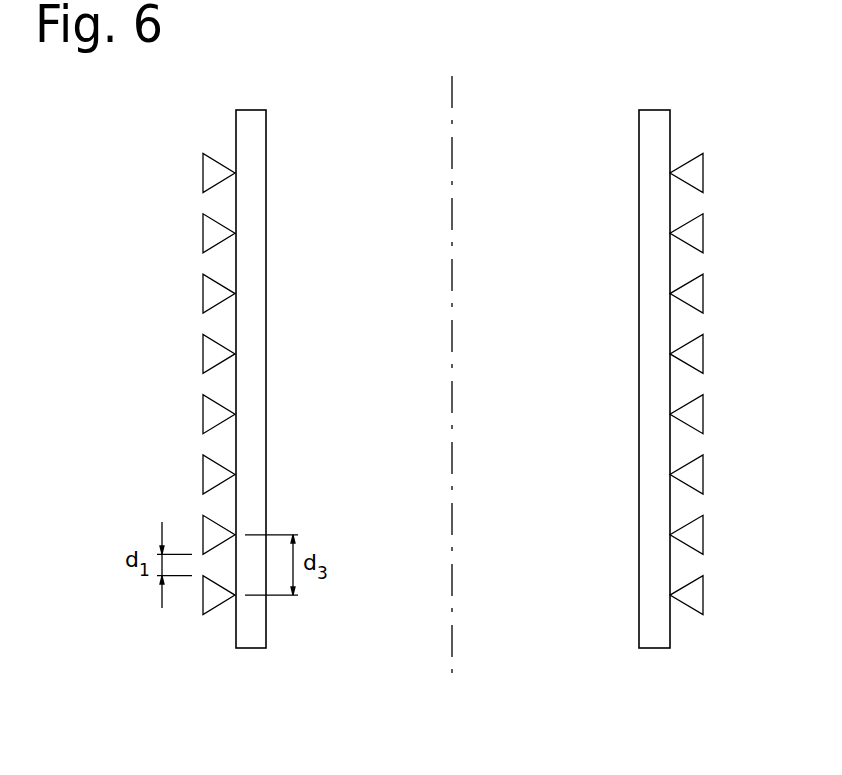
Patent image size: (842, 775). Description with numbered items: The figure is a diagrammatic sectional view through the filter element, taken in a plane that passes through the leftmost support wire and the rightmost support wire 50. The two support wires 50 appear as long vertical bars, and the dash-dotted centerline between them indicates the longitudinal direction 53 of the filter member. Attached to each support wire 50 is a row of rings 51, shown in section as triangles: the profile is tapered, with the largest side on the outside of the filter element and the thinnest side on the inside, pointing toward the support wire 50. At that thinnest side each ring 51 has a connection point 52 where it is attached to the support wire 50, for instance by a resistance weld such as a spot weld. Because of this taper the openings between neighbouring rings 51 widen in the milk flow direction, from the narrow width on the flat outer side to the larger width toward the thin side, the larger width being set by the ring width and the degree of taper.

The support wire 50 is at (253, 125).
The ring 51 is at (212, 295).
The connection point 52 is at (235, 172).
The longitudinal direction 53 is at (452, 110).